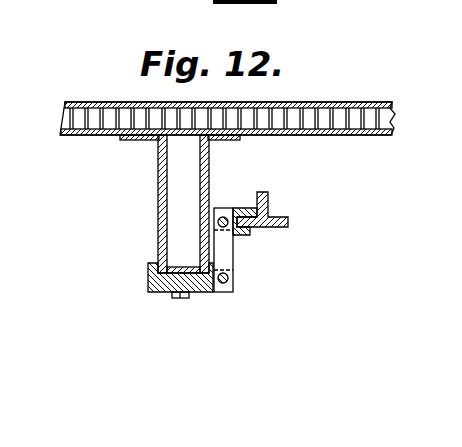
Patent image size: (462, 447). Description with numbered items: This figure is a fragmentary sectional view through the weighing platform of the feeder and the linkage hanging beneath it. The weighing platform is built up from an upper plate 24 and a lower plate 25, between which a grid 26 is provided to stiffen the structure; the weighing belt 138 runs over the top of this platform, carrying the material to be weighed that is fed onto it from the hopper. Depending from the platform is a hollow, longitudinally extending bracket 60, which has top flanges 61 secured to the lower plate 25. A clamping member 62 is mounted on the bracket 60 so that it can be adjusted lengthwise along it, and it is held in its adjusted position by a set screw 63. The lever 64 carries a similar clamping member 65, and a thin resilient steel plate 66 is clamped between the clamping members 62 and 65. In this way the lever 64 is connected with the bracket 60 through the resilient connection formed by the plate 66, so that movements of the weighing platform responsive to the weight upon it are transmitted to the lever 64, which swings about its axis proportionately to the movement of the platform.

The upper plate 24 is at (241, 115).
The lower plate 25 is at (370, 136).
The grid 26 is at (356, 122).
The weighing belt 138 is at (344, 104).
The bracket 60 is at (158, 182).
The top flanges 61 is at (133, 141).
The clamping member 62 is at (148, 282).
The set screw 63 is at (190, 296).
The lever 64 is at (273, 219).
The clamping member 65 is at (245, 236).
The resilient steel plate 66 is at (228, 254).